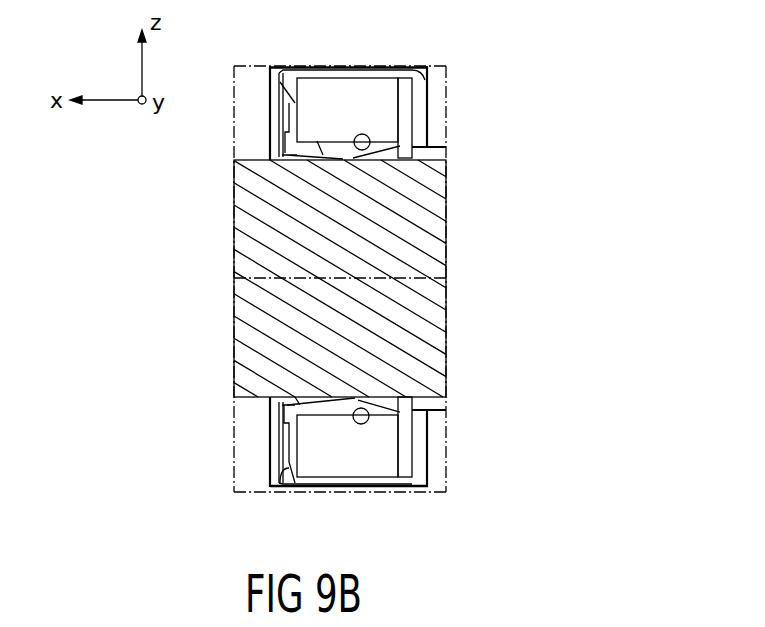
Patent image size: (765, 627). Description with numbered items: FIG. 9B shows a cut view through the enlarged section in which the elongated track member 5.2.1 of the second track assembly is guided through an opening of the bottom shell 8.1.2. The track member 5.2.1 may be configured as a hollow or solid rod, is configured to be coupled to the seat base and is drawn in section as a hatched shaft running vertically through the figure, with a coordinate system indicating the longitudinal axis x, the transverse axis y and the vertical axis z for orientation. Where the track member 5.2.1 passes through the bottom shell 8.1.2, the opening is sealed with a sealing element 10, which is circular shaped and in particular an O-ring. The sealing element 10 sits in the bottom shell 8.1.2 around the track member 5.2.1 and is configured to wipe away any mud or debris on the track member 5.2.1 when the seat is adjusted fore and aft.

The elongated track member 5.2.1 is at (436, 232).
The sealing element 10 is at (369, 419).
The bottom shell 8.1.2 is at (418, 450).